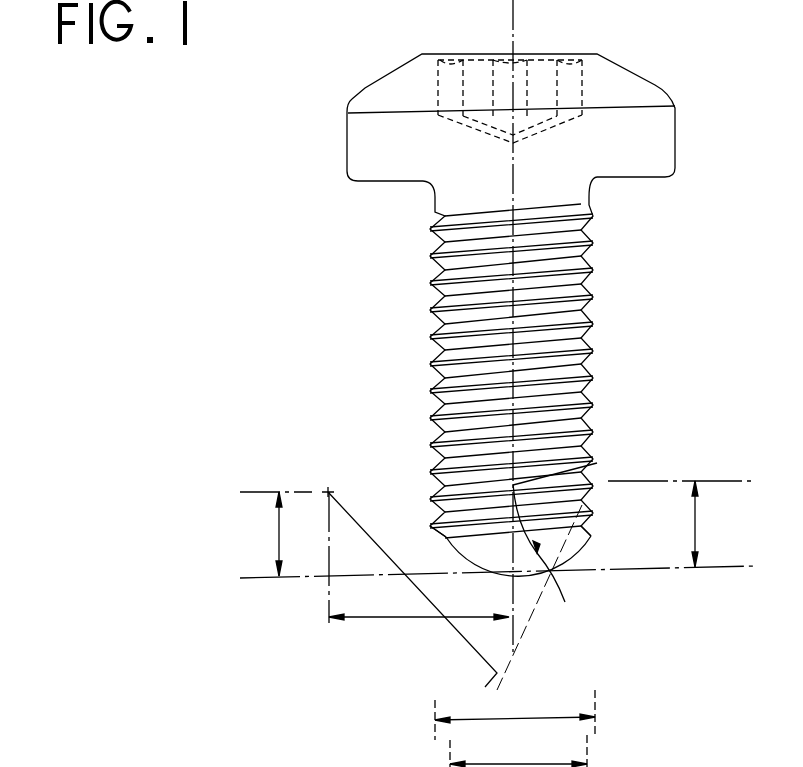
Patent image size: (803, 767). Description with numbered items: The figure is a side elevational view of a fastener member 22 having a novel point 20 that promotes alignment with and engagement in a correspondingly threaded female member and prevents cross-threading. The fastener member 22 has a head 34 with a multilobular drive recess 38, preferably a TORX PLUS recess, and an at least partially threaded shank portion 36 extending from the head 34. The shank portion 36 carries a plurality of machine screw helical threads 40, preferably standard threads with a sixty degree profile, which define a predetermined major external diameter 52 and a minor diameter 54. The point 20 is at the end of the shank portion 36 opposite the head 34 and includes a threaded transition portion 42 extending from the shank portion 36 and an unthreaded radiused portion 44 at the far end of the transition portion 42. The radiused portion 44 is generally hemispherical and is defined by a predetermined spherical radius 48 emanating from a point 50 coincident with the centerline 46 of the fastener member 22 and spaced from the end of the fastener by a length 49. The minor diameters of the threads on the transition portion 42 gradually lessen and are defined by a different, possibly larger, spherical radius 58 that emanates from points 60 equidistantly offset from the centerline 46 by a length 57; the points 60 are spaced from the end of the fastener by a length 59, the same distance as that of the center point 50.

The point 20 is at (580, 546).
The fastener member 22 is at (693, 353).
The head 34 is at (358, 150).
The threaded shank portion 36 is at (440, 330).
The multilobular drive recess 38 is at (583, 63).
The machine screw helical threads 40 is at (570, 245).
The threaded transition portion 42 is at (442, 527).
The unthreaded radiused portion 44 is at (498, 557).
The centerline 46 is at (515, 630).
The spherical radius 48 is at (547, 558).
The length 49 is at (714, 524).
The point 50 is at (597, 463).
The major external diameter 52 is at (548, 716).
The minor diameter 54 is at (508, 762).
The length 57 is at (390, 617).
The spherical radius 58 is at (403, 538).
The length 59 is at (277, 530).
The points 60 is at (353, 488).